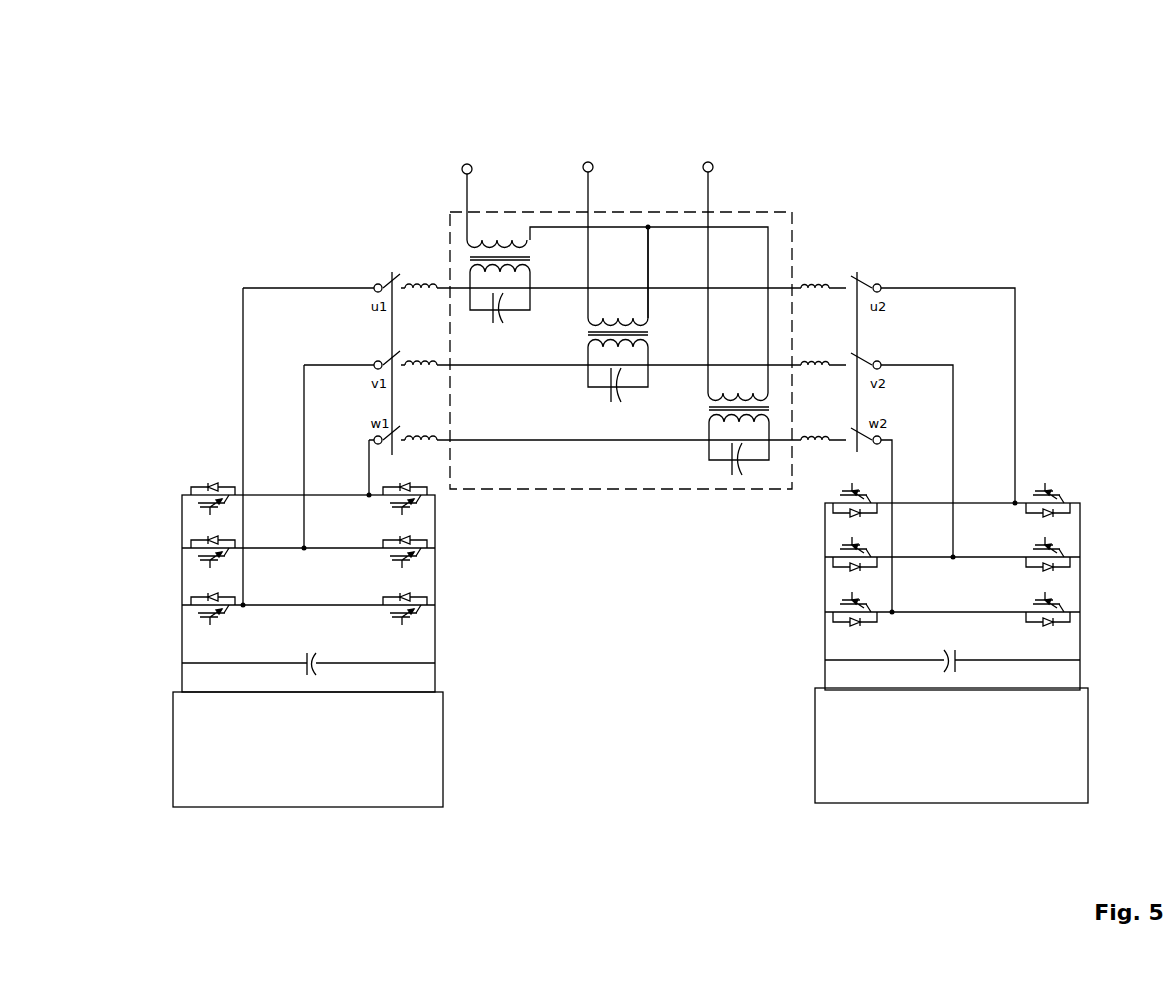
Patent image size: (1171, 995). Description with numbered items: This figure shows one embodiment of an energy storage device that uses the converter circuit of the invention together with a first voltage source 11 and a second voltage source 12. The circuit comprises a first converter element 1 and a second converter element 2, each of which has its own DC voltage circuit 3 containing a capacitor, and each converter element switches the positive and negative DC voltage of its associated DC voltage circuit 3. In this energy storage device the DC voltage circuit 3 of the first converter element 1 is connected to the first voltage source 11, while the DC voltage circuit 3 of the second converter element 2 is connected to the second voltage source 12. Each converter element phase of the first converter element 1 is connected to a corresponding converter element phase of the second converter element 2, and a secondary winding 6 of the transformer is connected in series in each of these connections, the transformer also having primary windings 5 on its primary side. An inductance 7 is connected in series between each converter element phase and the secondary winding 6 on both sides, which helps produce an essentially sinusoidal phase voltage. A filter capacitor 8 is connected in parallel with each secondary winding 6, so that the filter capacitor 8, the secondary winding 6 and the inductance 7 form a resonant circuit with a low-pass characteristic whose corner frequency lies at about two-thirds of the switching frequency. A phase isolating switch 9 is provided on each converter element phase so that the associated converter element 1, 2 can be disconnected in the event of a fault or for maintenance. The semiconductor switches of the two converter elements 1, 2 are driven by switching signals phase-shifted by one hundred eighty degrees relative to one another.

The first converter element 1 is at (272, 535).
The second converter element 2 is at (990, 532).
The DC voltage circuit 3 is at (292, 672).
The primary winding 5 is at (485, 243).
The secondary winding 6 is at (508, 268).
The inductance 7 is at (413, 284).
The filter capacitor 8 is at (503, 297).
The phase isolating switch 9 is at (397, 275).
The first voltage source 11 is at (388, 808).
The second voltage source 12 is at (1009, 803).